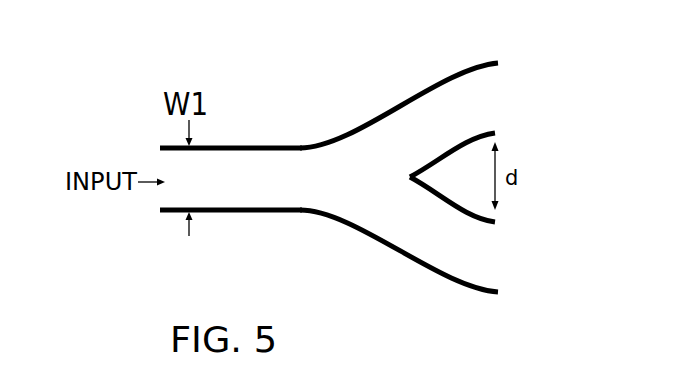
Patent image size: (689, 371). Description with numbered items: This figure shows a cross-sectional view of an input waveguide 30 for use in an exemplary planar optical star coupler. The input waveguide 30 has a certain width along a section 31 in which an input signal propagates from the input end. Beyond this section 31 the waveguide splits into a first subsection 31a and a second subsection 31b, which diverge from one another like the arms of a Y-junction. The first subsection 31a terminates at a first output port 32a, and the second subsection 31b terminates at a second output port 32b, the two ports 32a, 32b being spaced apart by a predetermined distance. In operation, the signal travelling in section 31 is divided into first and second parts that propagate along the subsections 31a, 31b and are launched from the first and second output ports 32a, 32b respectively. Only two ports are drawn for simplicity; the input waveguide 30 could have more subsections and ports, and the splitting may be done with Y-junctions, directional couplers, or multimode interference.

The input waveguide 30 is at (305, 55).
The section 31 is at (244, 188).
The first subsection 31a is at (413, 113).
The second subsection 31b is at (420, 247).
The first output port 32a is at (478, 95).
The second output port 32b is at (473, 257).